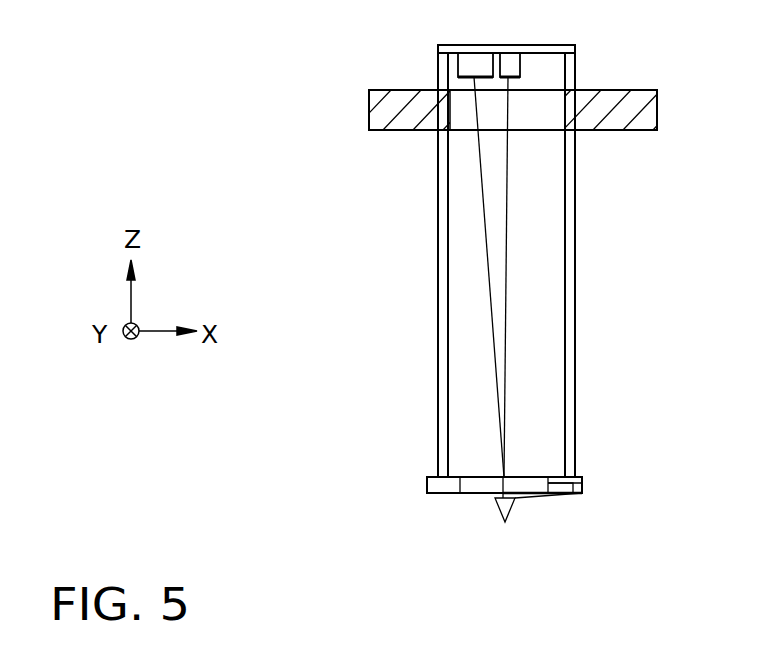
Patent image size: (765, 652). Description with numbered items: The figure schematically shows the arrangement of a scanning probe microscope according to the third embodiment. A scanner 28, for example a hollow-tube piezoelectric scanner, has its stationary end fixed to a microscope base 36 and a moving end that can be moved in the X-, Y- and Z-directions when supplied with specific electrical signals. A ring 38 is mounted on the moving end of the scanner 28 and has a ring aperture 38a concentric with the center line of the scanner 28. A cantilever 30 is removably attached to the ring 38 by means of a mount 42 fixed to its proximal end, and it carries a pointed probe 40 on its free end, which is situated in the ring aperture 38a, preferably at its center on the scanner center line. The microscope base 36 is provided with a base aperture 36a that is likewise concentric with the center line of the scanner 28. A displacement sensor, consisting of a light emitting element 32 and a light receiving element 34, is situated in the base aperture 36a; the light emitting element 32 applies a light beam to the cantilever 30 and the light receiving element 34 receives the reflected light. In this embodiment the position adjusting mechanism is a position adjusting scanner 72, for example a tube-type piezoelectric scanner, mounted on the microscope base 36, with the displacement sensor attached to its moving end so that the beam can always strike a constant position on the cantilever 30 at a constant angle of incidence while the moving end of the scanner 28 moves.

The scanner 28 is at (576, 333).
The cantilever 30 is at (539, 518).
The light emitting element 32 is at (521, 65).
The light receiving element 34 is at (468, 62).
The microscope base 36 is at (369, 113).
The base aperture 36a is at (540, 114).
The ring 38 is at (429, 482).
The ring aperture 38a is at (468, 473).
The pointed probe 40 is at (496, 503).
The mount 42 is at (583, 481).
The position adjusting scanner 72 is at (575, 67).